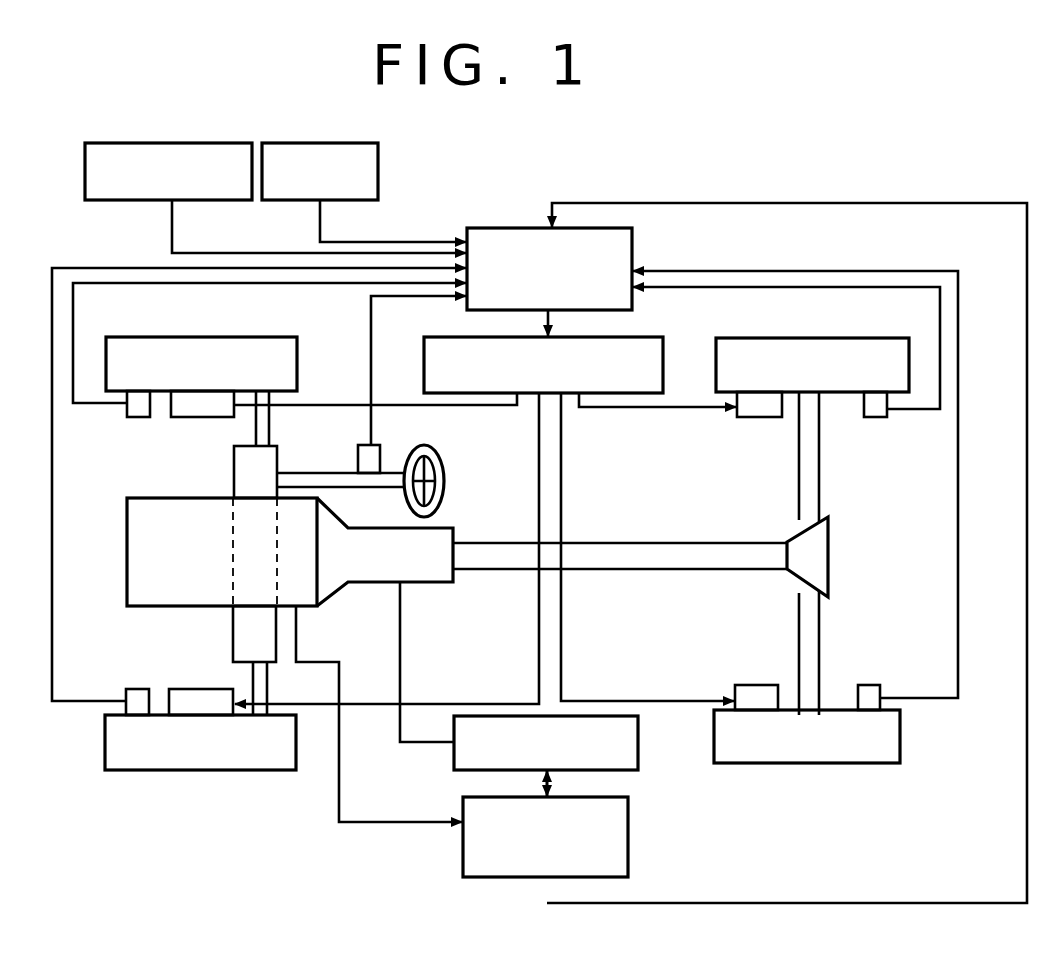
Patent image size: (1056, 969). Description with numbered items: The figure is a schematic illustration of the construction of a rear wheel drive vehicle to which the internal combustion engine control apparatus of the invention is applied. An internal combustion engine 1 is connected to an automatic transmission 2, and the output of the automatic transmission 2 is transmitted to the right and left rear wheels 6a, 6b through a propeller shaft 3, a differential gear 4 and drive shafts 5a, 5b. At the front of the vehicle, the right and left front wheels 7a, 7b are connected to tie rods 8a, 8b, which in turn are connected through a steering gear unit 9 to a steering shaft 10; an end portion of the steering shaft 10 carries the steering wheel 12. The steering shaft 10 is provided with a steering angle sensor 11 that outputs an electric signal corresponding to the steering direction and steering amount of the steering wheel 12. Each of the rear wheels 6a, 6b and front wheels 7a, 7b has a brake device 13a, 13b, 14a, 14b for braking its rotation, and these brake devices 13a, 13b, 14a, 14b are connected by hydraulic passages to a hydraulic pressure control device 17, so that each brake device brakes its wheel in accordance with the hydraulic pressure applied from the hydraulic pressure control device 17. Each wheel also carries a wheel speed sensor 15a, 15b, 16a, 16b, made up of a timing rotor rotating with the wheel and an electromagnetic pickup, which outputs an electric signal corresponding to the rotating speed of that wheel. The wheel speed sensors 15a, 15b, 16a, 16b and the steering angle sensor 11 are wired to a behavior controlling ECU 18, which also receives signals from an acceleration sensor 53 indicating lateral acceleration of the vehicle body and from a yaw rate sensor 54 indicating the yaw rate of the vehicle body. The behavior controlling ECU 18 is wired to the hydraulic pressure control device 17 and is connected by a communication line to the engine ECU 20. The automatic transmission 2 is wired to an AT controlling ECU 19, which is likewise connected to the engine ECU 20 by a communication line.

The internal combustion engine 1 is at (127, 555).
The automatic transmission 2 is at (435, 582).
The propeller shaft 3 is at (630, 550).
The differential gear 4 is at (828, 555).
The drive shaft 5a is at (819, 490).
The drive shaft 5b is at (819, 632).
The rear wheel 6a is at (825, 338).
The rear wheel 6b is at (878, 763).
The front wheel 7a is at (135, 337).
The front wheel 7b is at (148, 770).
The tie rod 8a is at (268, 432).
The tie rod 8b is at (266, 683).
The steering gear unit 9 is at (240, 487).
The steering shaft 10 is at (338, 480).
The steering angle sensor 11 is at (380, 458).
The steering wheel 12 is at (444, 462).
The brake device 13a is at (757, 417).
The brake device 13b is at (752, 690).
The brake device 14a is at (200, 417).
The brake device 14b is at (195, 689).
The wheel speed sensor 15a is at (873, 417).
The wheel speed sensor 15b is at (868, 690).
The wheel speed sensor 16a is at (135, 417).
The wheel speed sensor 16b is at (138, 689).
The hydraulic pressure control device 17 is at (663, 365).
The behavior controlling ECU 18 is at (632, 255).
The AT controlling ECU 19 is at (638, 760).
The engine ECU 20 is at (628, 857).
The acceleration sensor 53 is at (85, 190).
The yaw rate sensor 54 is at (378, 172).